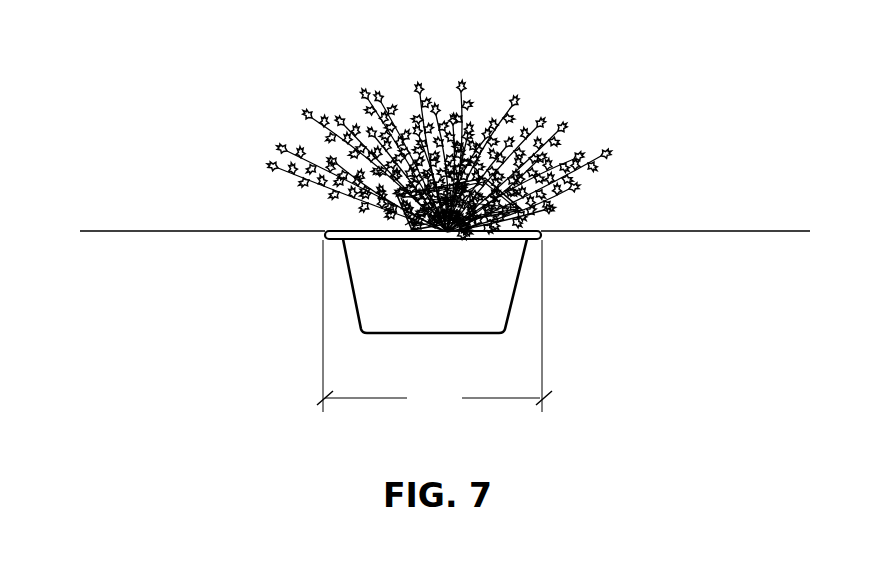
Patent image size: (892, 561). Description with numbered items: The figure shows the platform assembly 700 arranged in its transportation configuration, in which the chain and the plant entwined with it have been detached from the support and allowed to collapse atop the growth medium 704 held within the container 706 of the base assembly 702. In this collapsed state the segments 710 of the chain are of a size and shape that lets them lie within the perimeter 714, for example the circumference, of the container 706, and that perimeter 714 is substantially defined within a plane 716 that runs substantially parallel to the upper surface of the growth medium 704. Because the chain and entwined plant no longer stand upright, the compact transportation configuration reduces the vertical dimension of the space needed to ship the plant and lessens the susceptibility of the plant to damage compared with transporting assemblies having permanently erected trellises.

The platform assembly 700 is at (592, 98).
The base assembly 702 is at (568, 194).
The growth medium 704 is at (342, 225).
The container 706 is at (515, 288).
The segments 710 is at (367, 216).
The perimeter 714 is at (434, 326).
The plane 716 is at (152, 234).